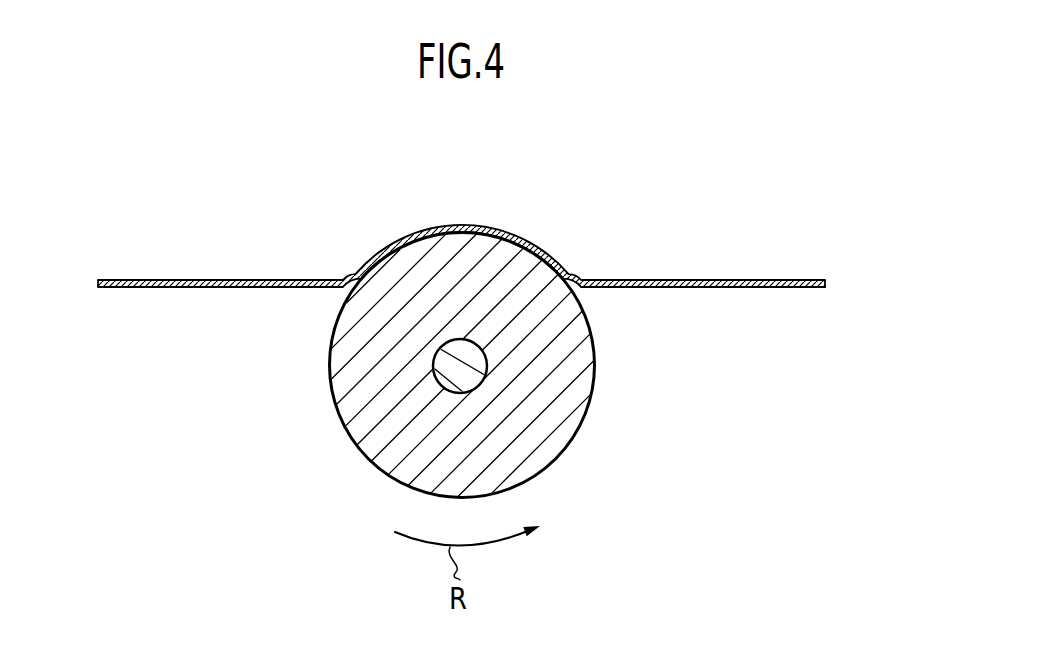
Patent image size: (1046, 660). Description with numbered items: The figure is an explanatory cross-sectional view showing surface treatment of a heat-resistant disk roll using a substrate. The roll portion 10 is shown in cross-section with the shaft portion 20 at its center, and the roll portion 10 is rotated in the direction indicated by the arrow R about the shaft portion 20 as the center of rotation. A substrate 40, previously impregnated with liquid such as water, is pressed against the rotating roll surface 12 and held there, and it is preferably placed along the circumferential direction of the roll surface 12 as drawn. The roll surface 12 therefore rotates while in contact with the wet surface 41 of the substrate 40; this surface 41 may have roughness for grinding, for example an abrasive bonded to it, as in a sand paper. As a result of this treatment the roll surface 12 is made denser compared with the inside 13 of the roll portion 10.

The roll portion 10 is at (449, 367).
The roll surface 12 is at (360, 453).
The inside 13 is at (565, 370).
The shaft portion 20 is at (459, 376).
The substrate 40 is at (692, 279).
The surface 41 is at (725, 289).